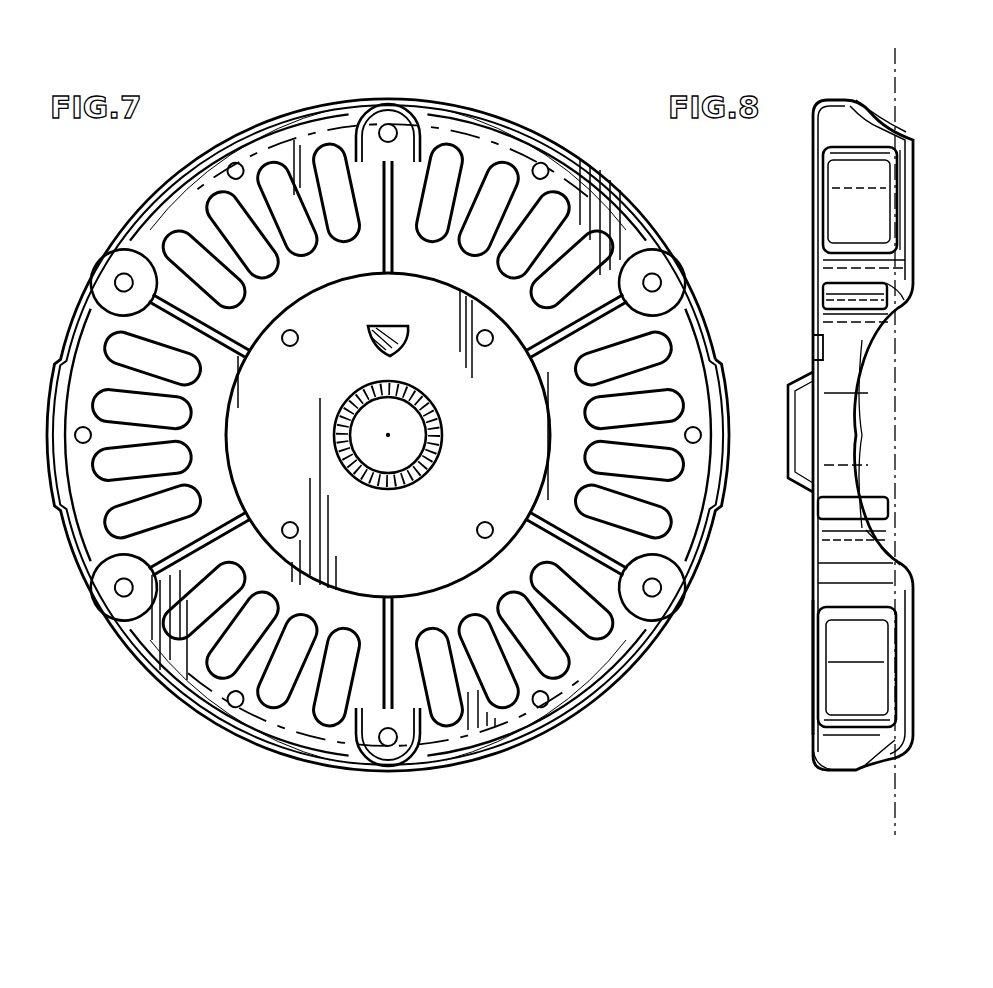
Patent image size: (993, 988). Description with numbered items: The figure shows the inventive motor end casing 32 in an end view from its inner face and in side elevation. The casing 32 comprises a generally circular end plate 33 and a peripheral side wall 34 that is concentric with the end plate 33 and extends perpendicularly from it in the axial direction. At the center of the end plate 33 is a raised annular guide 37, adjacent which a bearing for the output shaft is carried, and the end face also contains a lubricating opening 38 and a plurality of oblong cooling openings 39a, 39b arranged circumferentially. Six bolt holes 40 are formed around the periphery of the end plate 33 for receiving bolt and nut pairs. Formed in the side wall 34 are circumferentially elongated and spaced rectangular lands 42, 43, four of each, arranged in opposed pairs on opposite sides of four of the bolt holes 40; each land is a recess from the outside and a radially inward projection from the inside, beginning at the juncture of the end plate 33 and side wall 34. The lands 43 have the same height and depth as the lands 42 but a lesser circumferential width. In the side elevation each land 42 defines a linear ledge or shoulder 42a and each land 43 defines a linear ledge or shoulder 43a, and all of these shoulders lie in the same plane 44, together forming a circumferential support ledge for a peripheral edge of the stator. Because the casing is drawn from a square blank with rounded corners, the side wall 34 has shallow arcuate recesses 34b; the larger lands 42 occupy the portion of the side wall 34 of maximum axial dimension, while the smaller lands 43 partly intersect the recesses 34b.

In FIG. 8, the motor end casing 32 is at (929, 767).
In FIG. 8, the circular end plate 33 is at (802, 666).
In FIG. 8, the peripheral side wall 34 is at (820, 784).
In FIG. 8, the shallow arcuate recesses 34b is at (876, 120).
In FIG. 7, the raised annular guide 37 is at (440, 426).
In FIG. 8, the raised annular guide 37 is at (786, 490).
In FIG. 7, the lubricating opening 38 is at (366, 343).
In FIG. 8, the lubricating opening 38 is at (812, 348).
In FIG. 7, the oblong cooling opening 39a is at (333, 168).
In FIG. 7, the oblong cooling opening 39b is at (286, 182).
In FIG. 7, the bolt hole 40 is at (396, 122).
In FIG. 7, the rectangular land 42 is at (160, 203).
In FIG. 8, the rectangular land 42 is at (830, 198).
In FIG. 8, the linear ledge or shoulder 42a is at (900, 200).
In FIG. 7, the rectangular land 43 is at (88, 298).
In FIG. 8, the rectangular land 43 is at (836, 328).
In FIG. 8, the linear ledge or shoulder 43a is at (900, 293).
In FIG. 8, the plane of the shoulders 44 is at (902, 384).